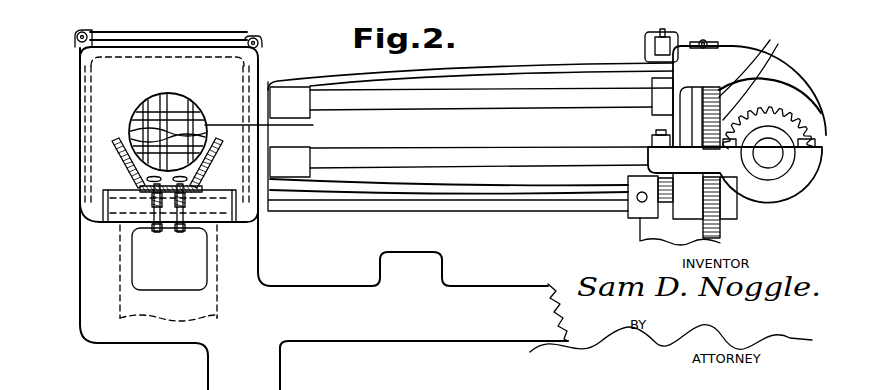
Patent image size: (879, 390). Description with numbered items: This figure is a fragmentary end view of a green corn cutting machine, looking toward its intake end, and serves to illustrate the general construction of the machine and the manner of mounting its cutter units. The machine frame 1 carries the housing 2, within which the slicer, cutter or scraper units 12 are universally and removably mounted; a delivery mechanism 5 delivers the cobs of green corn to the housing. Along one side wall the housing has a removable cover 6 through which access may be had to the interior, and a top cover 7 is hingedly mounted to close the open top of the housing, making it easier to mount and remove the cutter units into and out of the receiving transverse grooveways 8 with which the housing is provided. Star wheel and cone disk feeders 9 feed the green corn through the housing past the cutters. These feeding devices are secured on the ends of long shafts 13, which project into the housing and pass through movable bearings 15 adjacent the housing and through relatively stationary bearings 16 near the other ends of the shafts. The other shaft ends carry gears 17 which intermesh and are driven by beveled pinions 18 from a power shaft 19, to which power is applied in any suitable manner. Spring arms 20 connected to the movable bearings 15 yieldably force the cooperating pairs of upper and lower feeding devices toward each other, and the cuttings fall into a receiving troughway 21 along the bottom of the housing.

The machine frame 1 is at (120, 337).
The housing 2 is at (262, 55).
The delivery mechanism 5 is at (165, 200).
The removable cover 6 is at (82, 122).
The top cover 7 is at (166, 46).
The transverse grooveways 8 is at (85, 97).
The star wheel and cone disk feeders 9 is at (182, 98).
The slicer, cutter or scraper units 12 is at (278, 114).
The long shafts 13 is at (480, 100).
The movable bearings 15 is at (297, 165).
The stationary bearings 16 is at (663, 100).
The gears 17 is at (745, 72).
The beveled pinions 18 is at (786, 112).
The power shaft 19 is at (770, 152).
The spring arms 20 is at (522, 180).
The receiving troughway 21 is at (185, 332).